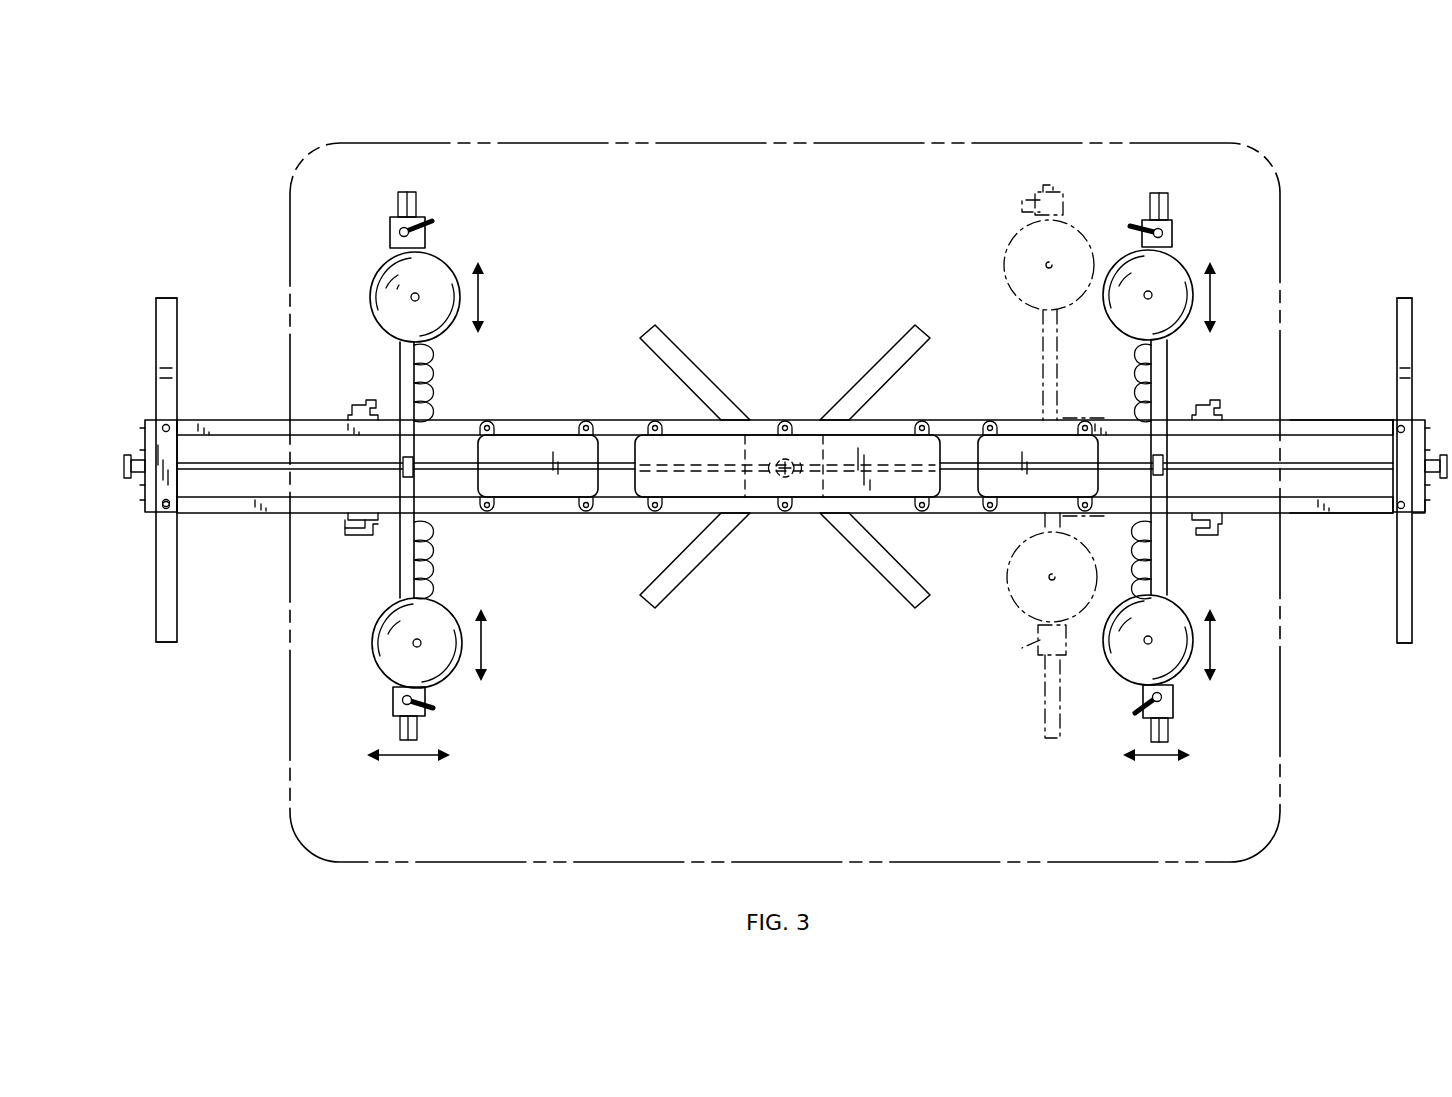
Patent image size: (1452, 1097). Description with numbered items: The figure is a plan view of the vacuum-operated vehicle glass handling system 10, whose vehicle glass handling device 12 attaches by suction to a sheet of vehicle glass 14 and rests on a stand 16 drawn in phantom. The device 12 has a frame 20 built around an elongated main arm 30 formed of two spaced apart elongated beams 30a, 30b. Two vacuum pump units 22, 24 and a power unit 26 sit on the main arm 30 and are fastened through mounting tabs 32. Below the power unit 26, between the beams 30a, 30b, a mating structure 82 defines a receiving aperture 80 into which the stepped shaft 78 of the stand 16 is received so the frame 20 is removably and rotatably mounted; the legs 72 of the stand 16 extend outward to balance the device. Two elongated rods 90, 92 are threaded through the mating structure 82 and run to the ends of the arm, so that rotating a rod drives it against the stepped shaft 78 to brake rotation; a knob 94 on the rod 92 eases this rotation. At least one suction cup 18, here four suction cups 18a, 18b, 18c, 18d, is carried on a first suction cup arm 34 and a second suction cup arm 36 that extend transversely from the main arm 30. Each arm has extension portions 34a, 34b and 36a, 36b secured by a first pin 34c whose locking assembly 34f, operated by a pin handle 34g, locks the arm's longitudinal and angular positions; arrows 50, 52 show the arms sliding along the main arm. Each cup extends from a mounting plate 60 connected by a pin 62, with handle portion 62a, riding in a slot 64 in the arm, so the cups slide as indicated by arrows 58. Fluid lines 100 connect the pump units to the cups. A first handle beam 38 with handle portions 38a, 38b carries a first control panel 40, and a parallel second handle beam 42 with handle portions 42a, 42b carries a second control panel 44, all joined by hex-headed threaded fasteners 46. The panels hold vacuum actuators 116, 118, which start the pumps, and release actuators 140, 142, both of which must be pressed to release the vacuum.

The vehicle glass handling system 10 is at (252, 847).
The vehicle glass handling device 12 is at (1330, 412).
The vehicle glass 14 is at (880, 153).
The stand 16 is at (785, 471).
The suction cup 18 is at (777, 461).
The suction cup 18a is at (445, 270).
The suction cup 18b is at (383, 657).
The suction cup 18c is at (1178, 272).
The suction cup 18d is at (1118, 662).
The frame 20 is at (1316, 518).
The vacuum pump unit 22 is at (553, 440).
The vacuum pump unit 24 is at (787, 467).
The power unit 26 is at (1010, 492).
The elongated main arm 30 is at (785, 465).
The elongated beam 30a is at (220, 513).
The elongated beam 30b is at (260, 422).
The mounting tabs 32 is at (648, 513).
The first suction cup arm 34 is at (319, 479).
The extension portion 34a is at (400, 462).
The extension portion 34b is at (383, 412).
The first pin 34c is at (368, 512).
The locking assembly 34f is at (345, 518).
The pin handle 34g is at (355, 535).
The second suction cup arm 36 is at (1198, 471).
The extension portion 36a is at (1187, 522).
The extension portion 36b is at (1197, 412).
The first handle beam 38 is at (199, 467).
The handle portion 38a is at (173, 652).
The handle portion 38b is at (170, 308).
The first control panel 40 is at (163, 417).
The second handle beam 42 is at (1381, 456).
The handle portion 42a is at (1402, 625).
The handle portion 42b is at (1404, 300).
The second control panel 44 is at (1418, 514).
The hex-headed threaded fasteners 46 is at (165, 509).
The arrow 50 is at (405, 757).
The arrow 52 is at (1150, 757).
The arrows 58 is at (483, 300).
The mounting plate 60 is at (392, 236).
The pin 62 is at (770, 443).
The handle portion 62a is at (433, 222).
The slot 64 is at (412, 203).
The legs 72 is at (665, 340).
The stepped shaft 78 is at (790, 453).
The receiving aperture 80 is at (778, 480).
The mating structure 82 is at (762, 445).
The elongated rod 90 is at (617, 462).
The elongated rod 92 is at (957, 462).
The knob 94 is at (127, 478).
The fluid lines 100 is at (432, 412).
The vacuum actuator 116 is at (171, 420).
The vacuum actuator 118 is at (1383, 480).
The release actuator 140 is at (148, 500).
The release actuator 142 is at (1427, 428).